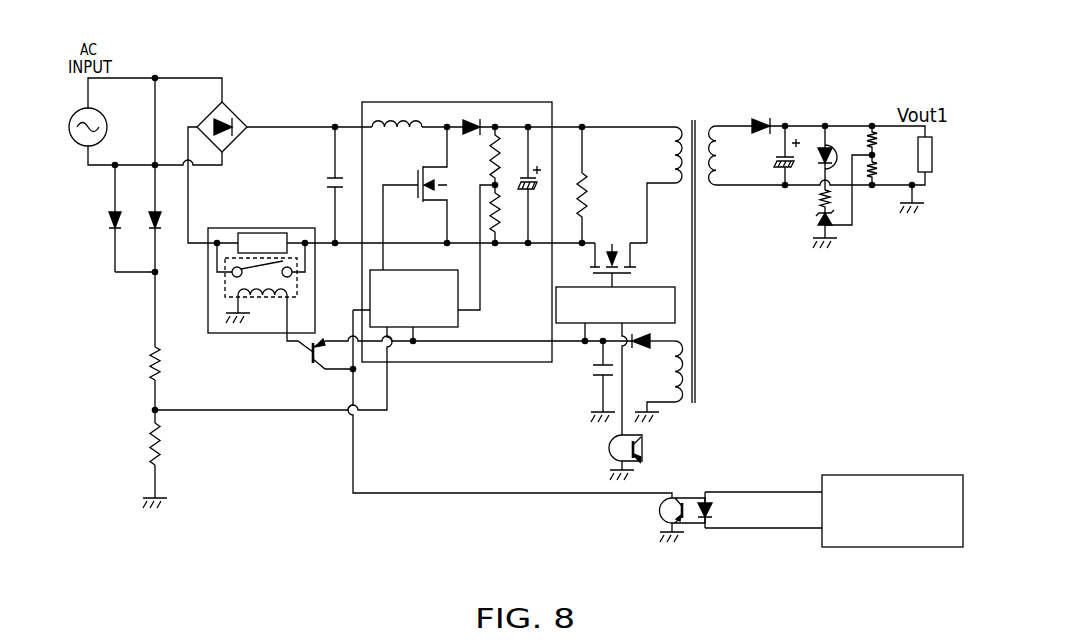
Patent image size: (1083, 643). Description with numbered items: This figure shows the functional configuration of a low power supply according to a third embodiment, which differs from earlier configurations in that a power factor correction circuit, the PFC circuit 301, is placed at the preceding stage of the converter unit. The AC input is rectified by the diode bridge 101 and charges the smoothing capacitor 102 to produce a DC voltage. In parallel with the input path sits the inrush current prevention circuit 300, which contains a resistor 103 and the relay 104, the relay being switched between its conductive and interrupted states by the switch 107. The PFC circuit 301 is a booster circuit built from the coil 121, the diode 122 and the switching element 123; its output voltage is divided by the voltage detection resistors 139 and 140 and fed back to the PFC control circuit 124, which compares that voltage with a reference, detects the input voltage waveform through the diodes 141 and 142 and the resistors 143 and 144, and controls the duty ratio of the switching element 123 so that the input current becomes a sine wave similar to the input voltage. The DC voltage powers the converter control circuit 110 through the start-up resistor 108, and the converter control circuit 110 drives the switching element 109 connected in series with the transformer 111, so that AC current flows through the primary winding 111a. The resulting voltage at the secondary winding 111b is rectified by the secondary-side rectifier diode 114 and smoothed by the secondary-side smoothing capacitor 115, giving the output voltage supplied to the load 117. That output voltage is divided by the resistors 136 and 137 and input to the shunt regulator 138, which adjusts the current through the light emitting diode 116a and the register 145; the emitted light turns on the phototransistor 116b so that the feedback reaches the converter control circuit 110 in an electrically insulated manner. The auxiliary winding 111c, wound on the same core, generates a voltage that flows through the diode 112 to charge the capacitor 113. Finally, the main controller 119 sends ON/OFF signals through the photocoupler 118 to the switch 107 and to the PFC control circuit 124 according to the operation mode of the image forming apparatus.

The diode bridge 101 is at (235, 109).
The smoothing capacitor 102 is at (327, 183).
The resistor 103 is at (262, 232).
The relay 104 is at (224, 288).
The switch 107 is at (300, 348).
The start-up resistor 108 is at (589, 190).
The switching element 109 is at (604, 243).
The converter control circuit 110 is at (647, 285).
The transformer 111 is at (693, 120).
The primary winding 111a is at (668, 125).
The secondary winding 111b is at (708, 126).
The auxiliary winding 111c is at (677, 402).
The diode 112 is at (650, 347).
The capacitor 113 is at (592, 372).
The secondary-side rectifier diode 114 is at (760, 118).
The secondary-side smoothing capacitor 115 is at (772, 158).
The light emitting diode 116a is at (832, 147).
The phototransistor 116b is at (612, 443).
The load 117 is at (933, 152).
The photocoupler 118 is at (661, 507).
The main controller 119 is at (896, 474).
The coil 121 is at (372, 116).
The diode 122 is at (472, 120).
The switching element 123 is at (417, 176).
The PFC control circuit 124 is at (370, 292).
The resistor 136 is at (877, 138).
The resistor 137 is at (877, 164).
The shunt regulator 138 is at (816, 223).
The voltage detection resistor 139 is at (500, 157).
The voltage detection resistor 140 is at (511, 225).
The diode 141 is at (108, 228).
The diode 142 is at (148, 228).
The resistor 143 is at (148, 365).
The resistor 144 is at (147, 447).
The register 145 is at (818, 197).
The inrush current prevention circuit 300 is at (255, 335).
The PFC circuit 301 is at (388, 103).